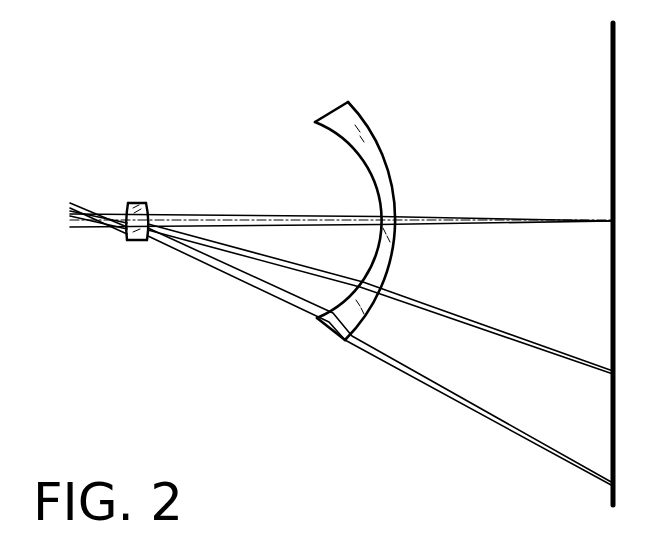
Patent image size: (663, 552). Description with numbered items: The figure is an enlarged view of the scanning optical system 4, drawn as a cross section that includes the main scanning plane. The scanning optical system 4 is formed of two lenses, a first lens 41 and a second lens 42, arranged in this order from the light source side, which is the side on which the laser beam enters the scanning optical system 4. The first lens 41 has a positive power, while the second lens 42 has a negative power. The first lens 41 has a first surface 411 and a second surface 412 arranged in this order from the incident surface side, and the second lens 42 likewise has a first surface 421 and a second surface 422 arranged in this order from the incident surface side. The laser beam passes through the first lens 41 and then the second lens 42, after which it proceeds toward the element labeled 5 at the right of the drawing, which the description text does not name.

The scanning optical system 4 is at (300, 378).
The first lens 41 is at (141, 242).
The first surface 411 is at (127, 206).
The second surface 412 is at (149, 202).
The second lens 42 is at (327, 332).
The first surface 421 is at (333, 134).
The second surface 422 is at (361, 112).
The screen 5 is at (611, 65).